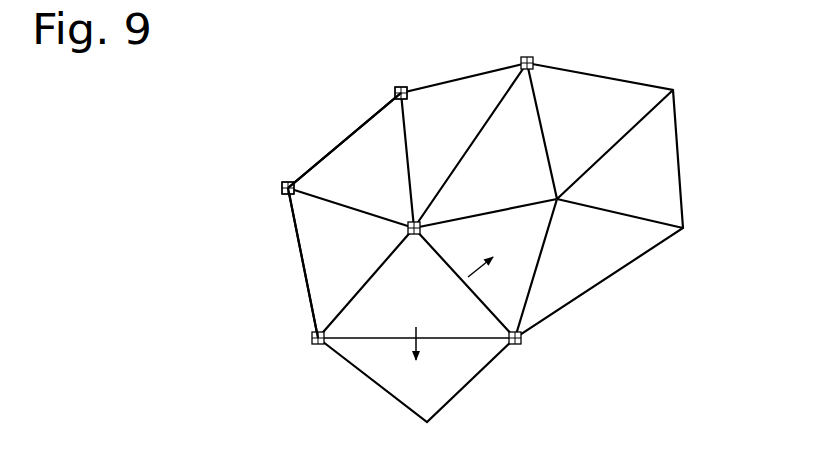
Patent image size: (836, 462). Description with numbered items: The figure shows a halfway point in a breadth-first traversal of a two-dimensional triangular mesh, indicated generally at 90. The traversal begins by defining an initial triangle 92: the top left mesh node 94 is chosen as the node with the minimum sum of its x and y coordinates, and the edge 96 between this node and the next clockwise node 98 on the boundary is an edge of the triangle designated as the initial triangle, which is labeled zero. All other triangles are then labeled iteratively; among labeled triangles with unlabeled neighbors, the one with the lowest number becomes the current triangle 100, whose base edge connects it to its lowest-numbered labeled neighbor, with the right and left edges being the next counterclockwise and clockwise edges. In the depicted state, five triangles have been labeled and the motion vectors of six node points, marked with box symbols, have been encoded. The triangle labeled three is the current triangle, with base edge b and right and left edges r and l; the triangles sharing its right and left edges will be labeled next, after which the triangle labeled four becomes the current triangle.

The breadth-first traversal of a 2D triangular mesh 90 is at (744, 74).
The initial triangle 92 is at (341, 80).
The top left mesh node 94 is at (284, 172).
The edge 96 is at (312, 150).
The next clockwise node 98 is at (404, 86).
The current triangle 100 is at (228, 297).